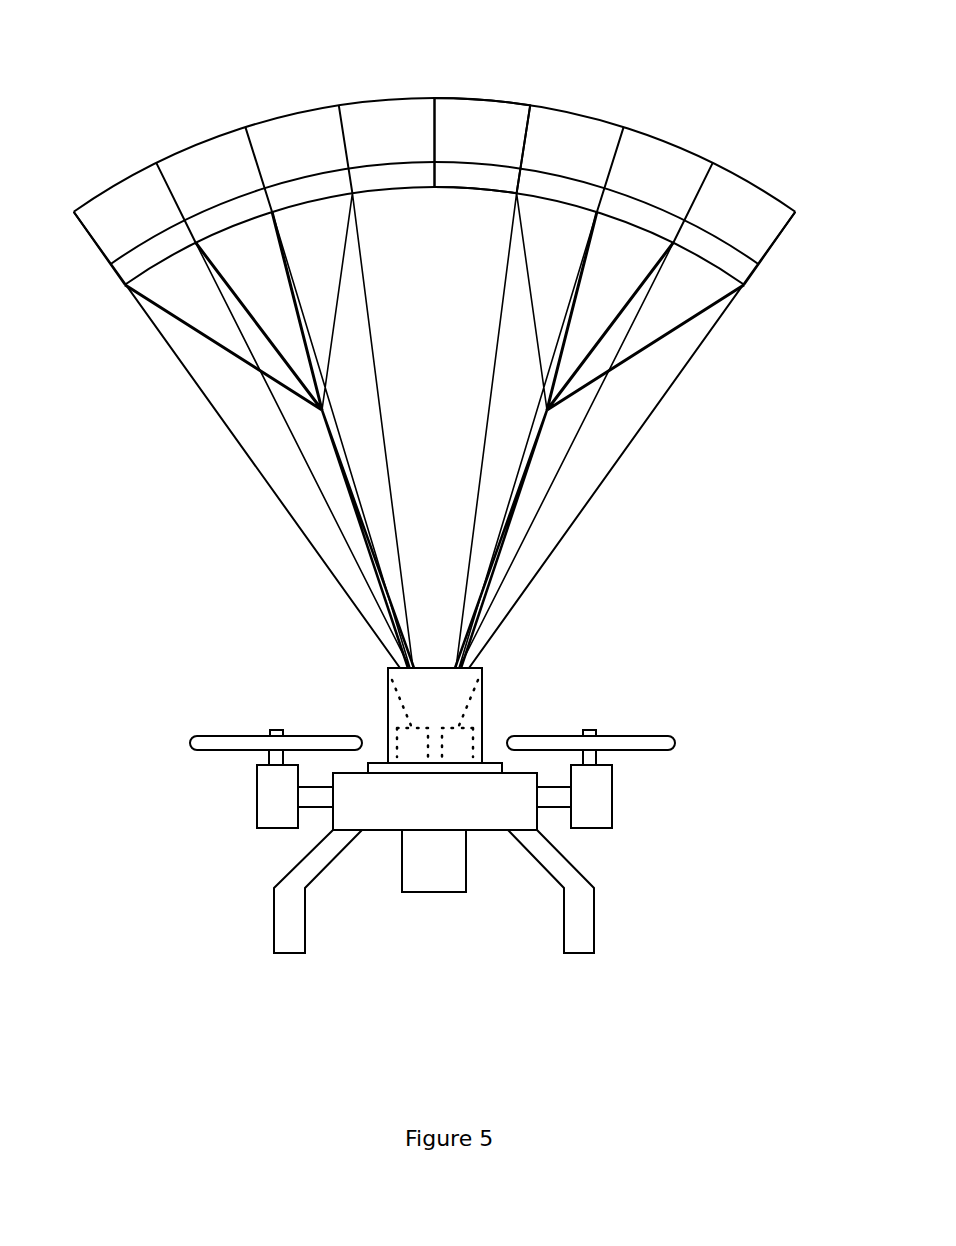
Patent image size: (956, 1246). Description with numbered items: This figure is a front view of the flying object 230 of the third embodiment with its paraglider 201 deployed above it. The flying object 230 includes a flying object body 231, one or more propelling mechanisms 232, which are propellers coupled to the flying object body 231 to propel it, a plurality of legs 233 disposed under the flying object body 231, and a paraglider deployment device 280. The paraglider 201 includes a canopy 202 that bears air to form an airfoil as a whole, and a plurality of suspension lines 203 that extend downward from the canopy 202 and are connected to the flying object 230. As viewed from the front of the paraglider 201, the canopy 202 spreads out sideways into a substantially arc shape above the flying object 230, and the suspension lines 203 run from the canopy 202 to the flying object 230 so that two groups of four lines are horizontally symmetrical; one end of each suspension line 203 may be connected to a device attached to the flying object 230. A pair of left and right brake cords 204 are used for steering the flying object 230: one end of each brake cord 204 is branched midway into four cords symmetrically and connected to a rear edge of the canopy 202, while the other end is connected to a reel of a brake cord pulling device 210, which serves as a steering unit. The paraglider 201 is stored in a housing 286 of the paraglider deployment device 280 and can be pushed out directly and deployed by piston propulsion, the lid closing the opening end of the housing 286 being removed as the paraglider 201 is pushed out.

The paraglider 201 is at (357, 100).
The canopy 202 is at (472, 99).
The suspension lines 203 is at (290, 430).
The brake cords 204 is at (347, 488).
The brake cord pulling device 210 is at (392, 680).
The paraglider deployment device 280 is at (496, 701).
The housing 286 is at (396, 706).
The flying object 230 is at (431, 908).
The flying object body 231 is at (390, 818).
The propelling mechanisms 232 is at (218, 740).
The legs 233 is at (293, 940).